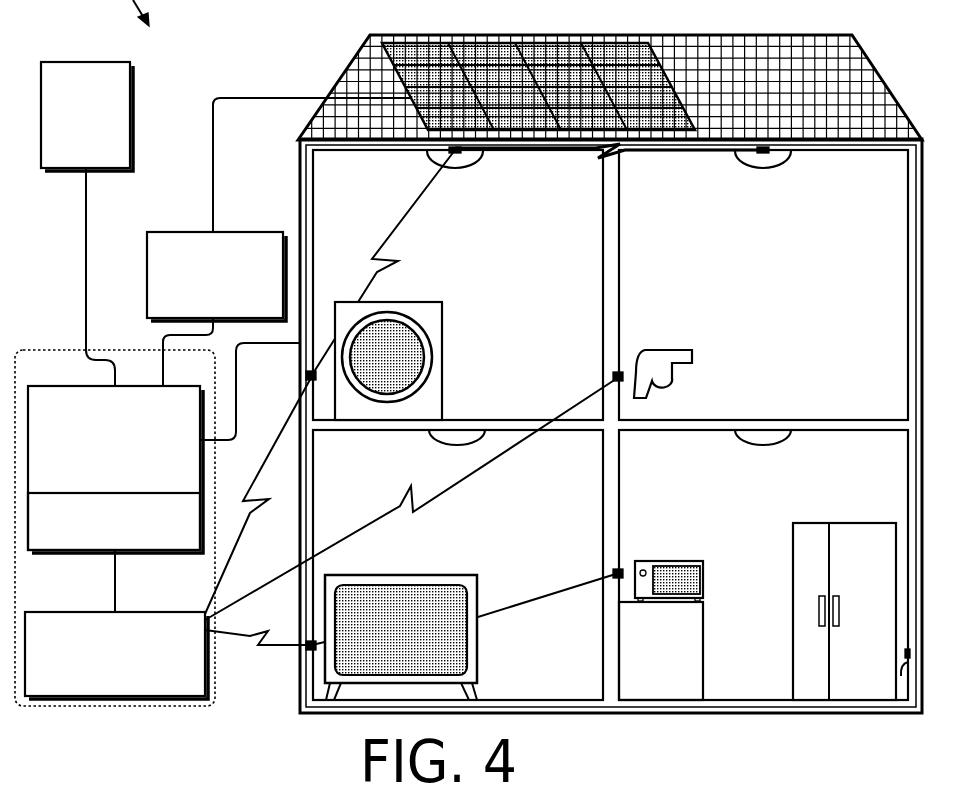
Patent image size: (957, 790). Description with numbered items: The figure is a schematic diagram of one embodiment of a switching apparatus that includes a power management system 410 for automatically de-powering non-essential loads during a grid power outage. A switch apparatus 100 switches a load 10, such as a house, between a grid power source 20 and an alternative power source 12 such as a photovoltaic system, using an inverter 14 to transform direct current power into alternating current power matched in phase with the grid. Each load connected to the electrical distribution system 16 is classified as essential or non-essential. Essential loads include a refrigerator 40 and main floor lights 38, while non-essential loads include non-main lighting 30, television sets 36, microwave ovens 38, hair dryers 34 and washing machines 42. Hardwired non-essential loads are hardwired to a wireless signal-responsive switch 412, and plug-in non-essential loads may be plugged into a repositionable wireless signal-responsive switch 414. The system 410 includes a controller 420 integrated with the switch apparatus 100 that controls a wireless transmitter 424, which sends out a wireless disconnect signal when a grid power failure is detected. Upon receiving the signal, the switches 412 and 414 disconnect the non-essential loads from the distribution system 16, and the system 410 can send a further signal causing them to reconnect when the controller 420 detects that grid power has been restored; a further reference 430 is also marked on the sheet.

The load 10 is at (622, 35).
The alternative power source 12 is at (480, 43).
The inverter 14 is at (240, 232).
The electrical distribution system 16 is at (301, 200).
The grid power source 20 is at (91, 62).
The non-main lighting 30 is at (438, 162).
The hair dryer 34 is at (660, 384).
The television set 36 is at (478, 580).
The main floor lights / microwave oven 38 is at (436, 440).
The refrigerator 40 is at (860, 523).
The washing machine 42 is at (427, 302).
The switch apparatus 100 is at (62, 386).
The power management system 410 is at (58, 341).
The wireless signal-responsive switch 412 is at (472, 162).
The repositionable wireless signal-responsive switch 414 is at (308, 377).
The controller 420 is at (82, 550).
The wireless transmitter 424 is at (99, 612).
The system reference 430 is at (858, 781).